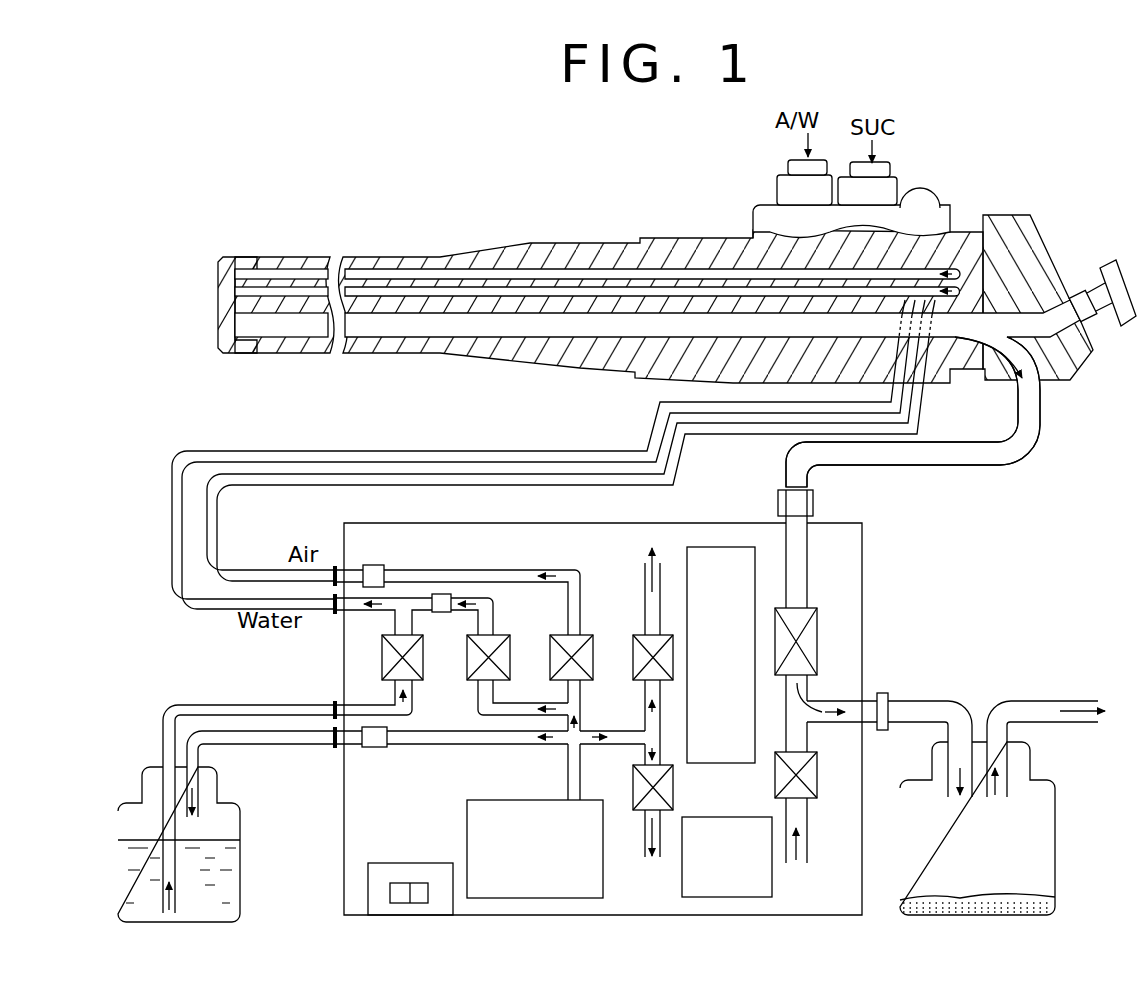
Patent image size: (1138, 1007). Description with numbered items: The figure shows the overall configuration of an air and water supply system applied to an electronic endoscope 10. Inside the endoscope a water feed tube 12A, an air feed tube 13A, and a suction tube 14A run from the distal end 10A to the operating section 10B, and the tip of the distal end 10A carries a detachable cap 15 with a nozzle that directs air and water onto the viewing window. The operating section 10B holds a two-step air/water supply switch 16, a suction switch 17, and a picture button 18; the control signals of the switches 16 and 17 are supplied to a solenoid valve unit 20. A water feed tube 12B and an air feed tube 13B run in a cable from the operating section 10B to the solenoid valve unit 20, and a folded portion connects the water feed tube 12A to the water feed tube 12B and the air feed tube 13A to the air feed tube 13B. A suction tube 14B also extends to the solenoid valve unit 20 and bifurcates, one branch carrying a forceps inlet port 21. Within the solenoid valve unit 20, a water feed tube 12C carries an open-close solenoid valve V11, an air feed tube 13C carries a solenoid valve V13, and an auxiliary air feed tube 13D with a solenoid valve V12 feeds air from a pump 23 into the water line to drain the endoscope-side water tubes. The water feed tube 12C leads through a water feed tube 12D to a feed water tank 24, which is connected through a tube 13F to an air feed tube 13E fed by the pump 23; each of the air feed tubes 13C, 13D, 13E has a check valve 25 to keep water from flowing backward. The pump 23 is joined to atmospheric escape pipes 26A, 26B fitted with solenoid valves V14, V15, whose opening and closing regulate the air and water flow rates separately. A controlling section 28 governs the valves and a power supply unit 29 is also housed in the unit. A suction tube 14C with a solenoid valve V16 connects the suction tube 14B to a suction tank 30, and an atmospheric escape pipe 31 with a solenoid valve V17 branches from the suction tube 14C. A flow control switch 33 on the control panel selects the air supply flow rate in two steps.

The endoscope 10 is at (650, 228).
The distal end 10A is at (273, 262).
The operating section 10B is at (950, 230).
The water feed tube 12A is at (398, 272).
The water feed tube 12B is at (303, 455).
The water feed tube 12C is at (411, 706).
The water feed tube 12D is at (213, 705).
The air feed tube 13A is at (503, 290).
The air feed tube 13B is at (277, 476).
The air feed tube 13C is at (493, 578).
The auxiliary air feed tube 13D is at (509, 718).
The air feed tube 13E is at (435, 746).
The tube 13F is at (250, 745).
The suction tube 14A is at (455, 325).
The suction tube 14B is at (1033, 432).
The suction tube 14C is at (808, 548).
The detachable cap 15 is at (237, 354).
The air/water supply switch 16 is at (780, 168).
The suction switch 17 is at (890, 172).
The picture button 18 is at (928, 197).
The solenoid valve unit 20 is at (863, 566).
The forceps inlet port 21 is at (1084, 296).
The pump 23 is at (541, 841).
The feed water tank 24 is at (241, 862).
The check valve 25 is at (437, 596).
The atmospheric escape pipe 26A is at (643, 576).
The atmospheric escape pipe 26B is at (645, 830).
The controlling section 28 is at (722, 818).
The power supply unit 29 is at (736, 580).
The suction tank 30 is at (1056, 812).
The atmospheric escape pipe 31 is at (808, 840).
The flow control switch 33 is at (392, 895).
The solenoid valve V11 is at (421, 654).
The solenoid valve V12 is at (506, 654).
The solenoid valve V13 is at (590, 654).
The solenoid valve V14 is at (645, 672).
The solenoid valve V15 is at (672, 787).
The solenoid valve V16 is at (814, 636).
The solenoid valve V17 is at (814, 770).